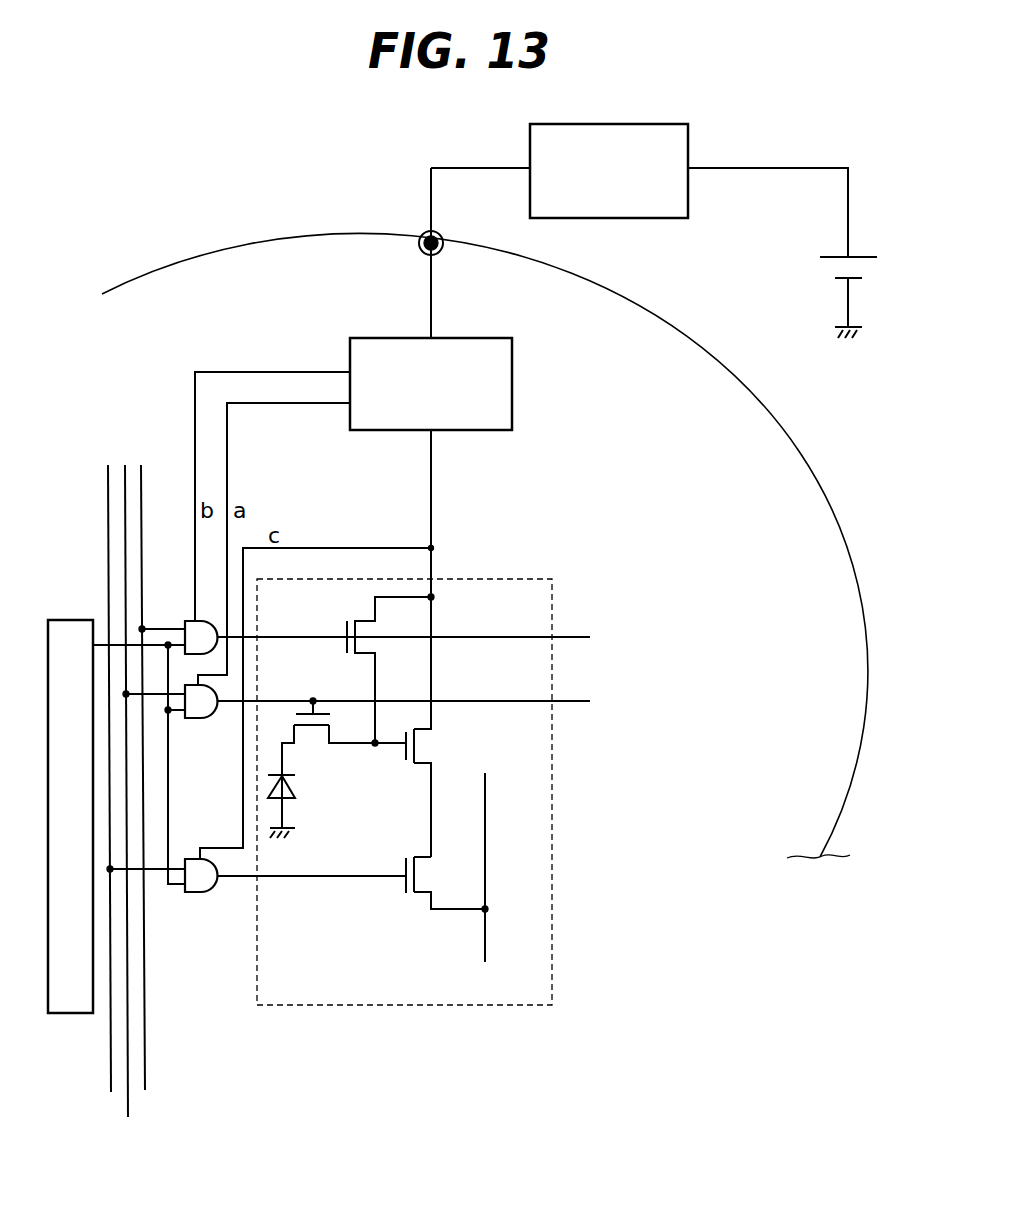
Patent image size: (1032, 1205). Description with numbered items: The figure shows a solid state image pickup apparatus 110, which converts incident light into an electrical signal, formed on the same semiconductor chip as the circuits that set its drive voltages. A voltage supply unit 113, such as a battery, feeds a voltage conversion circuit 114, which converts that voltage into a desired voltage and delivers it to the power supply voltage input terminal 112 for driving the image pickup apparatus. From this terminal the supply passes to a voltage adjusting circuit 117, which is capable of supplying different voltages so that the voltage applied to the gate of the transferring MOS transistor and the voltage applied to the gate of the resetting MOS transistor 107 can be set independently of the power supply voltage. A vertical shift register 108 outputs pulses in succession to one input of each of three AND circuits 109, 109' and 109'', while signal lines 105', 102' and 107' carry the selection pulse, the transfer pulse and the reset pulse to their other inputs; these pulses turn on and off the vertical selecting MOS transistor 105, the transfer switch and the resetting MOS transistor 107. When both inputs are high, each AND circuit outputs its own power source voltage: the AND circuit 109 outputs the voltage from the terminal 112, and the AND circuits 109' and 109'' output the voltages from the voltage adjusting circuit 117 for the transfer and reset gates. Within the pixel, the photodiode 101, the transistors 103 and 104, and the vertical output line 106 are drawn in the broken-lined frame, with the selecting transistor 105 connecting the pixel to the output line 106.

The photodiode 101 is at (300, 790).
The transfer transistor 103 is at (378, 750).
The amplifying transistor 104 is at (436, 740).
The vertical selecting MOS transistor 105 is at (438, 903).
The vertical output line 106 is at (487, 858).
The resetting MOS transistor 107 is at (355, 668).
The vertical shift register 108 is at (75, 1013).
The AND circuit 109 is at (203, 906).
The AND circuit 109' is at (205, 728).
The AND circuit 109'' is at (182, 617).
The solid state image pickup apparatus 110 is at (838, 540).
The power supply voltage input terminal 112 is at (418, 247).
The voltage supply unit 113 is at (835, 268).
The voltage conversion circuit 114 is at (668, 123).
The voltage adjusting circuit 117 is at (487, 338).
The signal line 102' is at (139, 780).
The signal line 105' is at (116, 786).
The signal line 107' is at (168, 772).